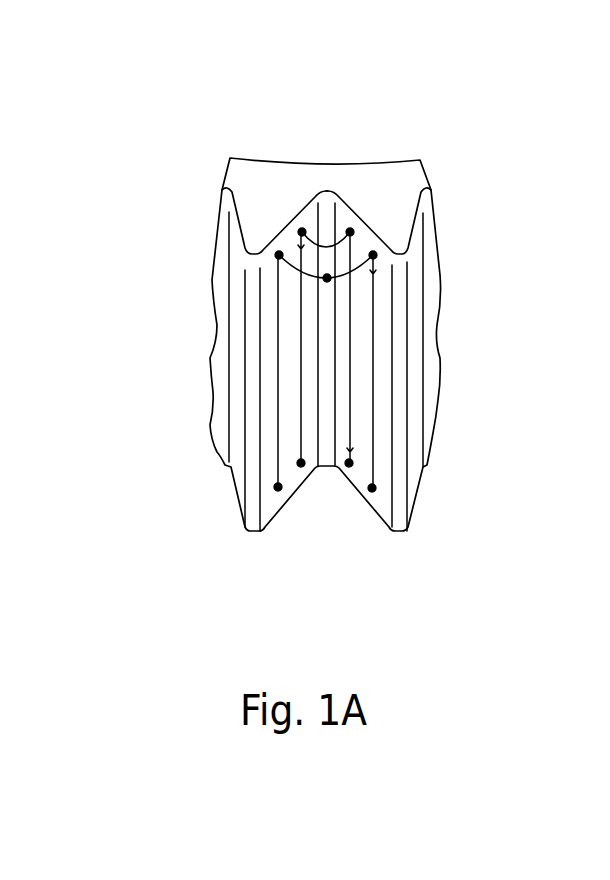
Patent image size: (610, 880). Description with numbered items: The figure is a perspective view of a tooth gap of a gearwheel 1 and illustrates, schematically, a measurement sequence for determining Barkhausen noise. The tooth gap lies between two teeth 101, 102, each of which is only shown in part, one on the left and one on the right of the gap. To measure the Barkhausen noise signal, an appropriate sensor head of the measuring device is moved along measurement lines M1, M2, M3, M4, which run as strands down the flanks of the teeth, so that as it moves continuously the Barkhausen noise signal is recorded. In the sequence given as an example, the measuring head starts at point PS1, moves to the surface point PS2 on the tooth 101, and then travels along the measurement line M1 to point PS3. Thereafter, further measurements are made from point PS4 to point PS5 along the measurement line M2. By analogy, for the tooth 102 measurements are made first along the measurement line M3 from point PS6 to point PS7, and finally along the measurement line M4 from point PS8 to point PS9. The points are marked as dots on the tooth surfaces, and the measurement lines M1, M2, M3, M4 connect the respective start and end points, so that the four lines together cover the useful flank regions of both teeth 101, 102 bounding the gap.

The hair structure 1 is at (473, 148).
The tooth 101 is at (258, 220).
The tooth 102 is at (402, 230).
The point PS1 is at (327, 280).
The surface point PS2 is at (279, 255).
The point PS3 is at (278, 487).
The point PS4 is at (301, 463).
The point PS5 is at (302, 232).
The point PS6 is at (350, 232).
The point PS7 is at (349, 463).
The point PS8 is at (372, 488).
The point PS9 is at (373, 255).
The measurement line M1 is at (296, 472).
The measurement line M2 is at (303, 382).
The measurement line M3 is at (350, 368).
The measurement line M4 is at (373, 425).